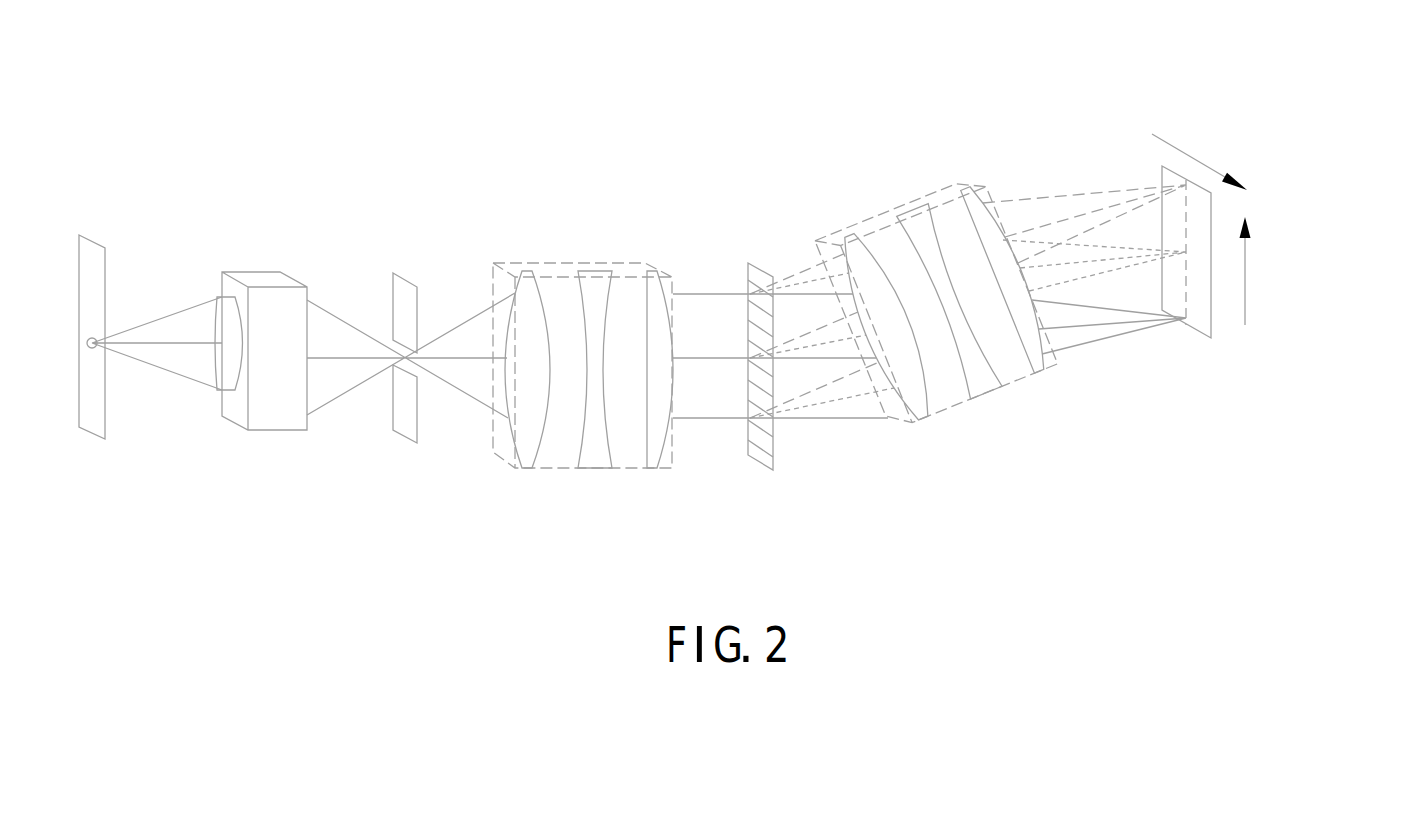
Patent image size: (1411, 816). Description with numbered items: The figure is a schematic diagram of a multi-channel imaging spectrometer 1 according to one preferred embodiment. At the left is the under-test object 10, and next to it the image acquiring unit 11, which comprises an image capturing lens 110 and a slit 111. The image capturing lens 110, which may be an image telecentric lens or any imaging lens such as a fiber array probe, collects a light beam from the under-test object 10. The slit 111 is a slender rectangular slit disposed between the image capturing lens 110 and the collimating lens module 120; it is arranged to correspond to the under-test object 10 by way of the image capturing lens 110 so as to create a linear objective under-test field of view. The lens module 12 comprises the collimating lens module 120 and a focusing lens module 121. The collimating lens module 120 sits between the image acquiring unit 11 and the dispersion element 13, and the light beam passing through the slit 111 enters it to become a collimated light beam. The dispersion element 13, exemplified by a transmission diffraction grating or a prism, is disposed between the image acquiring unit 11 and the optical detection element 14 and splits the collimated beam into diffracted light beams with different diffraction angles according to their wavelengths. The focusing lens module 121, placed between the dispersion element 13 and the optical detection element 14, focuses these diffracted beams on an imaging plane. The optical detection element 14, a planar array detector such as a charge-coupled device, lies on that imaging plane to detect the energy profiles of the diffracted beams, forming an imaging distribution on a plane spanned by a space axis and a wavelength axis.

The multi-channel imaging spectrometer 1 is at (160, 76).
The under-test object 10 is at (90, 232).
The image acquiring unit 11 is at (427, 157).
The image capturing lens 110 is at (263, 277).
The slit 111 is at (405, 288).
The lens module 12 is at (724, 112).
The collimating lens module 120 is at (553, 262).
The focusing lens module 121 is at (853, 232).
The dispersion element 13 is at (770, 455).
The optical detection element 14 is at (1162, 170).